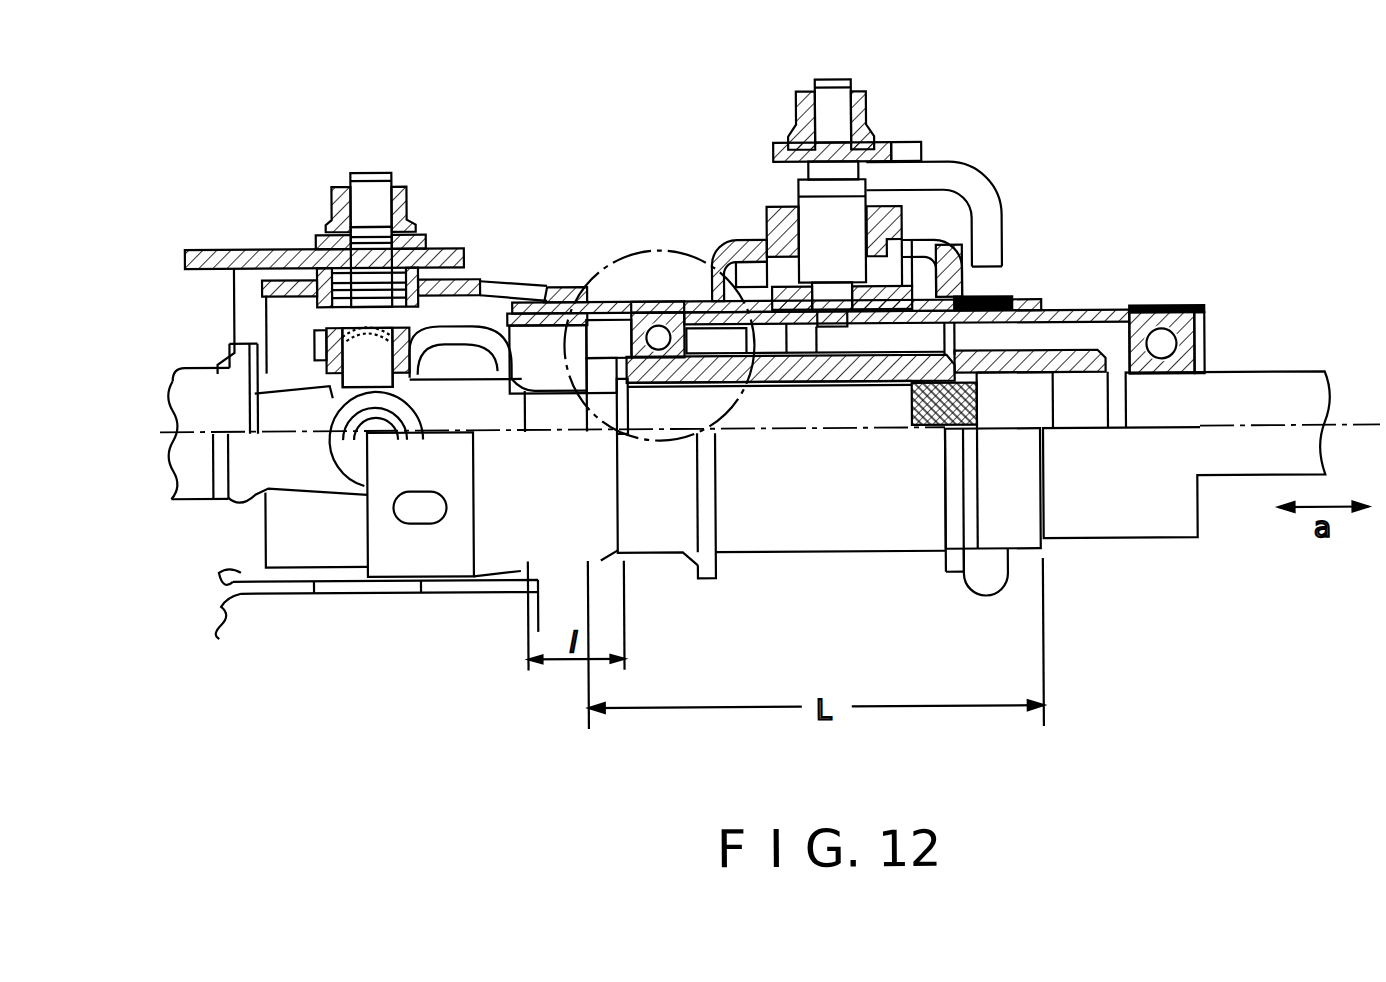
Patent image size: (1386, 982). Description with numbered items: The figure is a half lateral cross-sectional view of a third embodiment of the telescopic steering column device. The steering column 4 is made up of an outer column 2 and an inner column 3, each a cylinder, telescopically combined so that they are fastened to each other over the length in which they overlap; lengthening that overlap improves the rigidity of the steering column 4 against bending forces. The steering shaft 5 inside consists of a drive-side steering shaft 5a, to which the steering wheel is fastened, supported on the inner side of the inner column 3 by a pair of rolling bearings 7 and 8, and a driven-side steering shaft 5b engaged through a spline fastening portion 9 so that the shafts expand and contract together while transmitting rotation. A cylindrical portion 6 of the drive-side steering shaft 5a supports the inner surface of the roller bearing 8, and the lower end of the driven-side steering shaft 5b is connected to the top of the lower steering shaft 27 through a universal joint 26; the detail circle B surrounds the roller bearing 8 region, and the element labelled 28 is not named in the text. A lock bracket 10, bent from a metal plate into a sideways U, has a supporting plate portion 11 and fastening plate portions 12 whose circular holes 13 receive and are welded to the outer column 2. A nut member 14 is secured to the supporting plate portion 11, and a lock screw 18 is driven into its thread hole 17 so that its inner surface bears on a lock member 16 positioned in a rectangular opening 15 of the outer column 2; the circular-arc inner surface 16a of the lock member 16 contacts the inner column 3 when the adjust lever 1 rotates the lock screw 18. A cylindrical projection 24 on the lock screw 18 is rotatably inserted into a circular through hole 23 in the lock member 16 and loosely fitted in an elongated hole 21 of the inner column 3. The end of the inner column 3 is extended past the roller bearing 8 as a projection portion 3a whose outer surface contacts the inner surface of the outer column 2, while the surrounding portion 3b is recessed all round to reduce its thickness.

The adjust lever 1 is at (1003, 229).
The outer column 2 is at (618, 303).
The inner column 3 is at (1090, 303).
The projection portion 3a is at (598, 298).
The portion of the outer surface of the inner column 3b is at (650, 308).
The steering column 4 is at (1172, 310).
The steering shaft 5 is at (1273, 395).
The drive-side steering shaft 5a is at (1077, 365).
The driven-side steering shaft 5b is at (904, 417).
The cylindrical portion 6 is at (877, 372).
The rolling bearing 7 is at (1198, 328).
The roller bearing 8 is at (650, 378).
The spline fastening portion 9 is at (940, 380).
The lock bracket 10 is at (730, 253).
The supporting plate portion 11 is at (988, 238).
The fastening plate portions 12 is at (700, 262).
The circular holes 13 is at (735, 300).
The nut member 14 is at (903, 223).
The rectangular opening 15 is at (787, 345).
The lock member 16 is at (800, 333).
The inner surface 16a is at (867, 333).
The thread hole 17 is at (870, 203).
The lock screw 18 is at (840, 207).
The elongated hole 21 is at (757, 335).
The circular through hole 23 is at (853, 333).
The cylindrical projection 24 is at (818, 335).
The universal joint 26 is at (360, 350).
The lower steering shaft 27 is at (192, 402).
The bolt 28 is at (372, 190).
The detail circle B is at (583, 272).